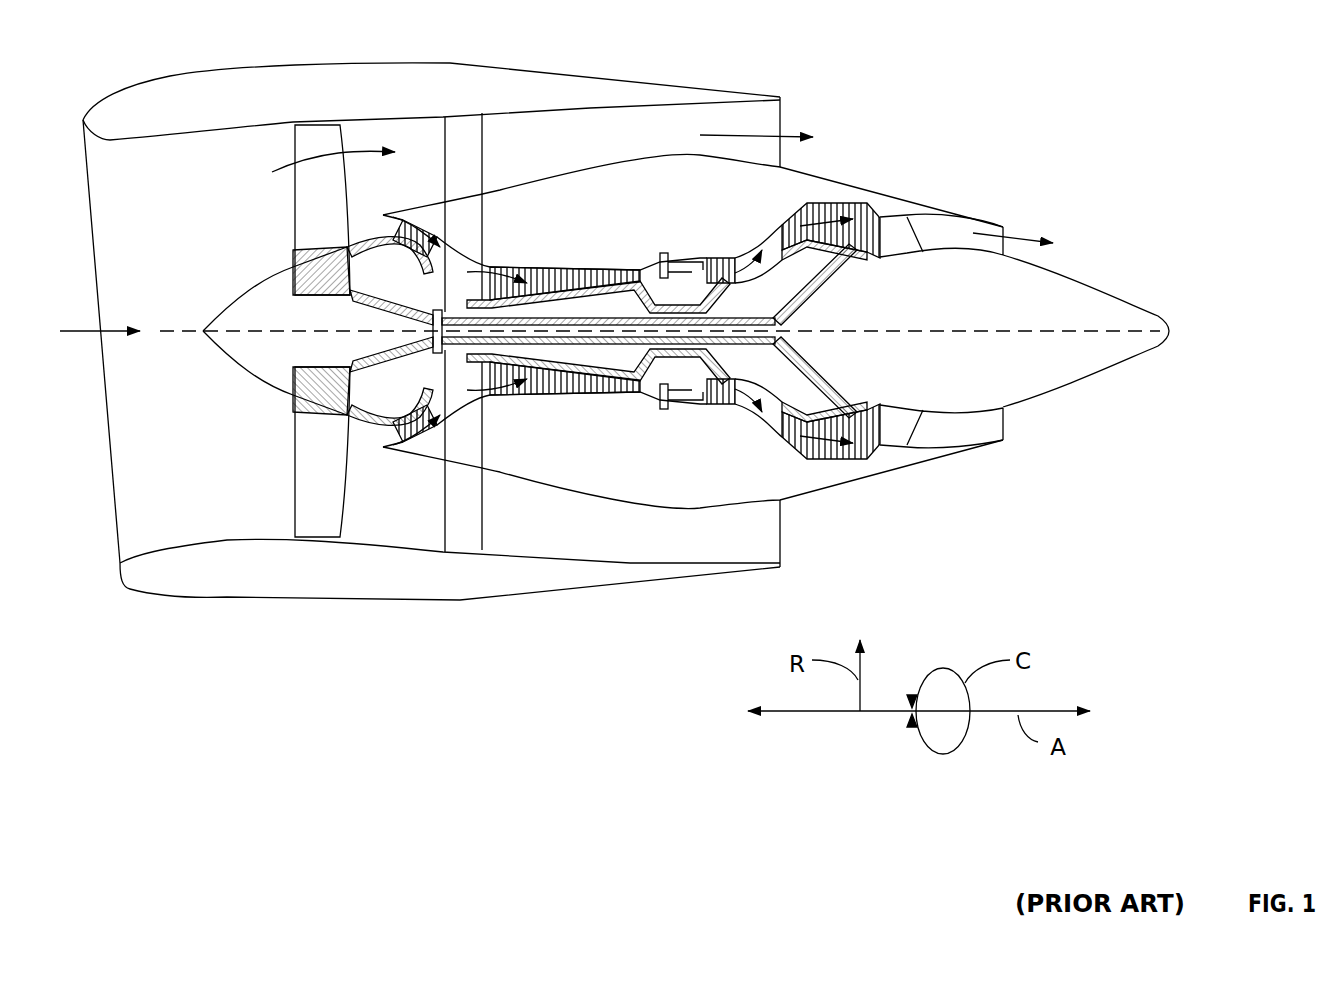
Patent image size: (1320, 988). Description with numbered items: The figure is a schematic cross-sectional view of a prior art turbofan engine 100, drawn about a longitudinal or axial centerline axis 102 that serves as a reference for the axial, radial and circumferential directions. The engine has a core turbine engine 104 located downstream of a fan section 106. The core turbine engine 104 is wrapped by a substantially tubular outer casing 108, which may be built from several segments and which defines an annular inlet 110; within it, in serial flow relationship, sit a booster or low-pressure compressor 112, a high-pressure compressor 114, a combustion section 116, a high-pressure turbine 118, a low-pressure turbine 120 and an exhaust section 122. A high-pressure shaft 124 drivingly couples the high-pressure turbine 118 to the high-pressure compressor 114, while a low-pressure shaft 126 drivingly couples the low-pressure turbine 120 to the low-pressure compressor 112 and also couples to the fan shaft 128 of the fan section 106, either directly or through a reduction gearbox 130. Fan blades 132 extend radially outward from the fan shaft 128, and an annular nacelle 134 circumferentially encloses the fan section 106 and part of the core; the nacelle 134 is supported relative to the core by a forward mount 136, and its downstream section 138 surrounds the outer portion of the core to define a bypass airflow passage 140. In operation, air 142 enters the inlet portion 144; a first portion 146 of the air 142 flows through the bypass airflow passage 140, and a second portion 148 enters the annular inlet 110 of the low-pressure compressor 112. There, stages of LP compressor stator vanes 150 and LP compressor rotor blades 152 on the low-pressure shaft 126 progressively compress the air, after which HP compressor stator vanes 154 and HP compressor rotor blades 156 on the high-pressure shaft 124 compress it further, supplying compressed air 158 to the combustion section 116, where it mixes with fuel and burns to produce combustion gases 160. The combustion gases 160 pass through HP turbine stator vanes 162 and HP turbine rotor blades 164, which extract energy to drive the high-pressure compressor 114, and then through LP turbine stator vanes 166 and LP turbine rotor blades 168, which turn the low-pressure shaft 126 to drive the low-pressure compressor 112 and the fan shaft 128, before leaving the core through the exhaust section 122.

The turbofan engine 100 is at (920, 72).
The longitudinal or axial centerline axis 102 is at (928, 331).
The core turbine engine 104 is at (612, 210).
The fan section 106 is at (213, 193).
The outer casing 108 is at (630, 493).
The annular inlet 110 is at (385, 440).
The low-pressure compressor 112 is at (437, 422).
The high-pressure compressor 114 is at (517, 400).
The combustion section 116 is at (677, 405).
The high-pressure turbine 118 is at (747, 393).
The low-pressure turbine 120 is at (865, 457).
The exhaust section 122 is at (1008, 226).
The high-pressure shaft 124 is at (745, 300).
The low-pressure shaft 126 is at (443, 313).
The fan shaft 128 is at (343, 302).
The reduction gearbox 130 is at (455, 397).
The fan blades 132 is at (293, 468).
The nacelle 134 is at (362, 60).
The forward mount 136 is at (484, 152).
The downstream section 138 is at (688, 78).
The bypass airflow passage 140 is at (622, 149).
The air 142 is at (112, 330).
The inlet portion 144 is at (117, 540).
The first portion of the air 146 is at (307, 163).
The second portion of the air 148 is at (368, 227).
The LP compressor stator vanes 150 is at (412, 452).
The LP compressor rotor blades 152 is at (412, 442).
The HP compressor stator vanes 154 is at (614, 398).
The HP compressor rotor blades 156 is at (612, 395).
The compressed air 158 is at (685, 297).
The combustion gases 160 is at (832, 203).
The HP turbine stator vanes 162 is at (713, 398).
The HP turbine rotor blades 164 is at (720, 392).
The LP turbine stator vanes 166 is at (783, 222).
The LP turbine rotor blades 168 is at (788, 215).